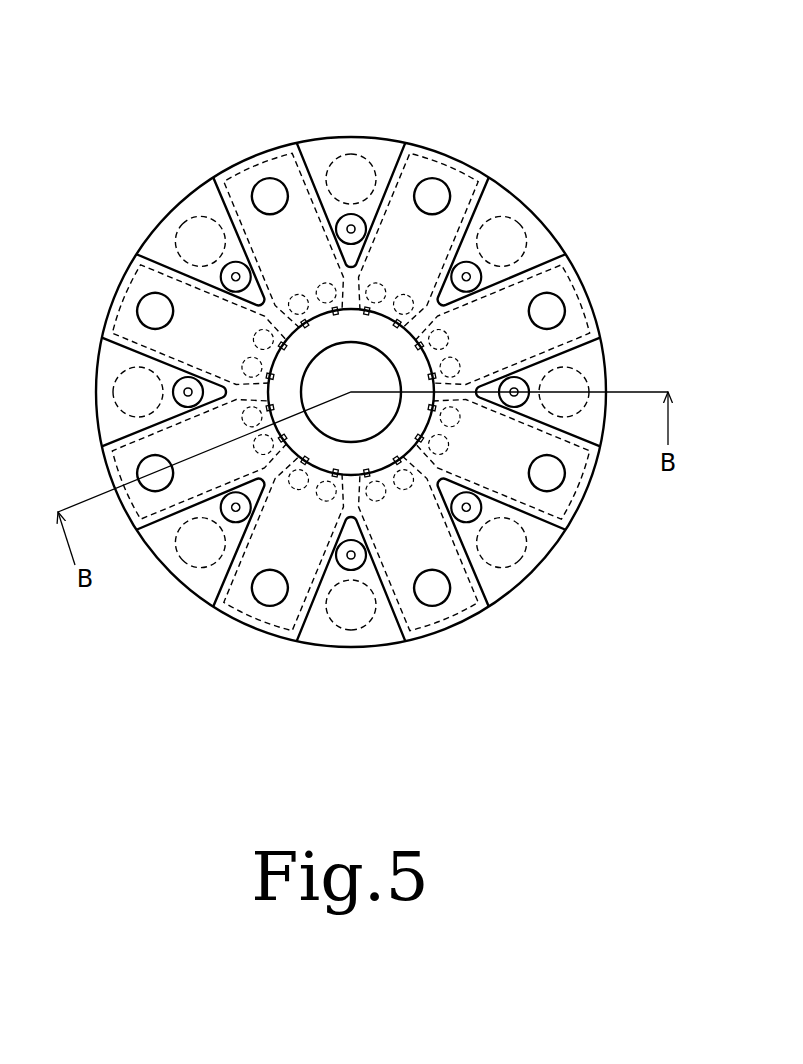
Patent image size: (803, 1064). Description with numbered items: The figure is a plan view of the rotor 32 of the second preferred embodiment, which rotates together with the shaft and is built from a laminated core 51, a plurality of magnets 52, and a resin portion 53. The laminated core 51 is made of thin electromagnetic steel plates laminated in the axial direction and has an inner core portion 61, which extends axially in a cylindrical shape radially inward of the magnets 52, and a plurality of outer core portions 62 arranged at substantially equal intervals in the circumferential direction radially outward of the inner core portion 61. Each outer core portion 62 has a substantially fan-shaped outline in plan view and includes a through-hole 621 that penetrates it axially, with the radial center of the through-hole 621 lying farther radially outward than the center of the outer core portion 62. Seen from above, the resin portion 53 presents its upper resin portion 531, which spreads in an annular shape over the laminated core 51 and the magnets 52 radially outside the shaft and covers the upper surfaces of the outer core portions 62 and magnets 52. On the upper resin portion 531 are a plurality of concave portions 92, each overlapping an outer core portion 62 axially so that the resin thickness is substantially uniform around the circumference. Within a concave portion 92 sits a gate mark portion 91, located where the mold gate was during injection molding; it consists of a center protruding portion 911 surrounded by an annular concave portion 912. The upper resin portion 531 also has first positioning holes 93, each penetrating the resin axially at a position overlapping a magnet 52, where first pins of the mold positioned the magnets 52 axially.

The rotor 32 is at (246, 104).
The laminated core 51 is at (668, 275).
The magnet 52 is at (432, 588).
The resin portion 53 is at (464, 150).
The upper resin portion 531 is at (503, 463).
The inner core portion 61 is at (410, 367).
The outer core portion 62 is at (574, 260).
The through-hole 621 is at (507, 234).
The gate mark portion 91 is at (345, 69).
The center protruding portion 911 is at (350, 226).
The annular concave portion 912 is at (361, 217).
The concave portion 92 is at (206, 207).
The first positioning hole 93 is at (156, 311).